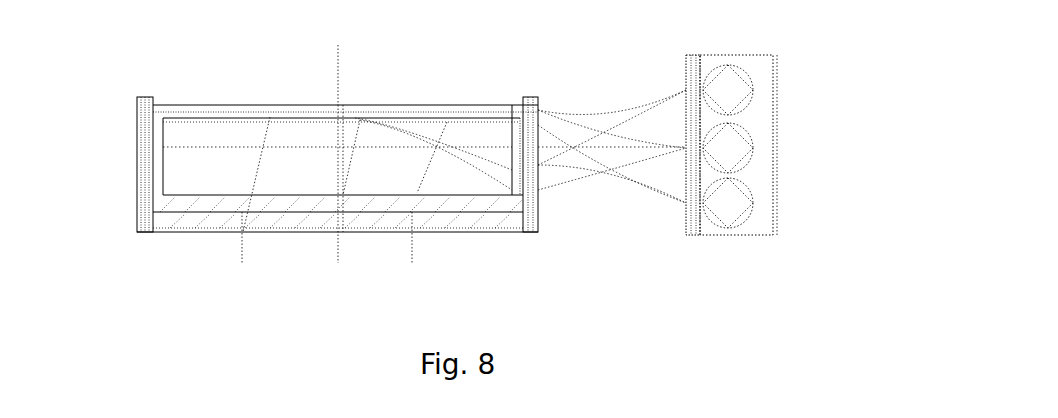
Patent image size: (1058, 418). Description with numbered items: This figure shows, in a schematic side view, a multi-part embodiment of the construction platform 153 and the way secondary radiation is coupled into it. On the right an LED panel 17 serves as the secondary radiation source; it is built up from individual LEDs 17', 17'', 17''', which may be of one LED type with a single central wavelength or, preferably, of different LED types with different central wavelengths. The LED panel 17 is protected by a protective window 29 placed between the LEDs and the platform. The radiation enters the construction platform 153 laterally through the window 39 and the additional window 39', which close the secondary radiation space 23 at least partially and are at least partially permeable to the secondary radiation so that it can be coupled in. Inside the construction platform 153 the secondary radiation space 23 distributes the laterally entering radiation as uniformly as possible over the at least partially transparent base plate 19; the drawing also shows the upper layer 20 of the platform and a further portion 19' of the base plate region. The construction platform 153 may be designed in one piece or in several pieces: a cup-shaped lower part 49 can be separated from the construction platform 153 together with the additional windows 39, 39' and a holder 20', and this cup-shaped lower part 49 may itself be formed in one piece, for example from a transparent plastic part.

The construction platform 153 is at (107, 80).
The cup-shaped lower part 49 is at (152, 238).
The upper cladding layer 20 is at (345, 69).
The holder 20' is at (563, 196).
The secondary radiation space 23 is at (211, 190).
The window 39 is at (479, 116).
The additional window 39' is at (609, 173).
The at least partially transparent base plate 19 is at (338, 251).
The lower reflective layer portion 19' is at (342, 260).
The protective window 29 is at (688, 222).
The LED panel 17 is at (818, 140).
The individual LED 17' is at (772, 203).
The individual LED 17'' is at (775, 148).
The individual LED 17''' is at (778, 88).